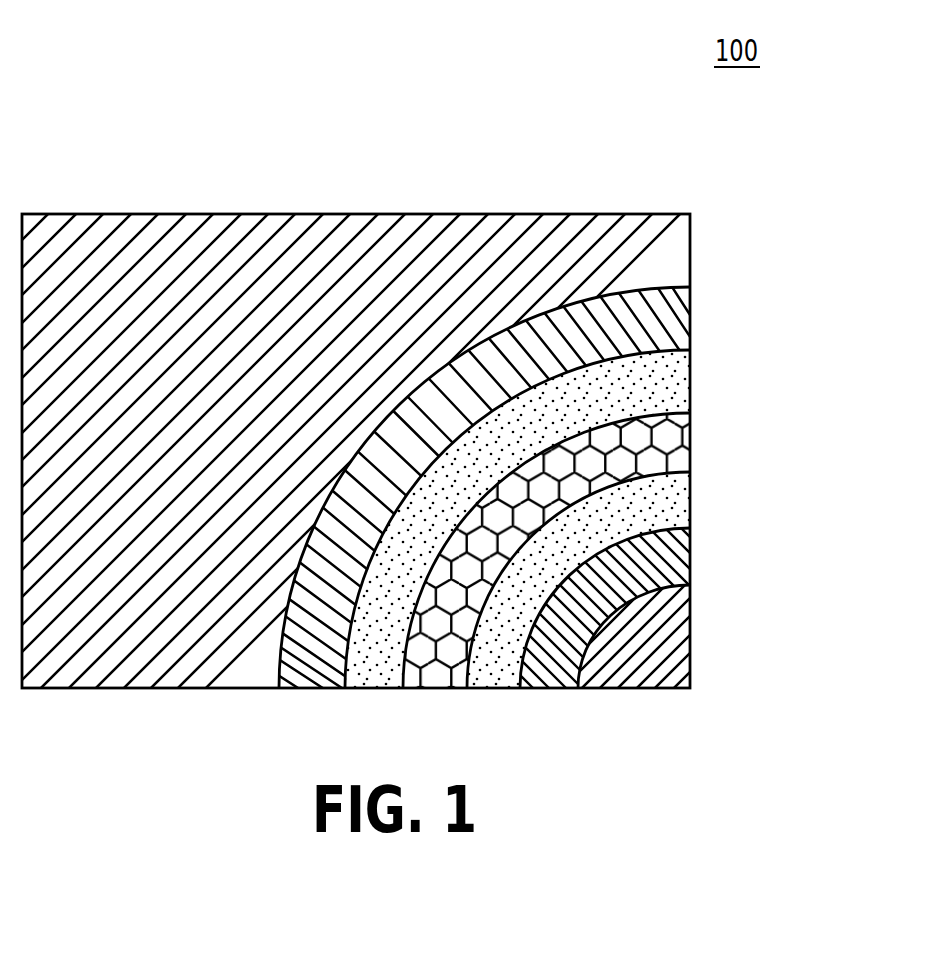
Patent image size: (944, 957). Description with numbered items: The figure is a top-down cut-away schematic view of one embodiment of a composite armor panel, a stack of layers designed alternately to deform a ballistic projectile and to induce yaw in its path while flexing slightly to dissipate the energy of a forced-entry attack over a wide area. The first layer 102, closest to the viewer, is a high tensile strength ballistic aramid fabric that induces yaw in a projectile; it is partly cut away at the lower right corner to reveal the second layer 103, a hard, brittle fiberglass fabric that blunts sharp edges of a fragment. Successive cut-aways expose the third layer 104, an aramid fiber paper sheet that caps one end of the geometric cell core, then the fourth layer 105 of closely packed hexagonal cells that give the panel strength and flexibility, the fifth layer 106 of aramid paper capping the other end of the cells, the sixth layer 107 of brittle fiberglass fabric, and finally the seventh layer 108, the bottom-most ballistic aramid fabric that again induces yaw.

The first layer 102 is at (676, 242).
The second layer 103 is at (683, 318).
The third layer 104 is at (680, 378).
The fourth layer 105 is at (683, 437).
The fifth layer 106 is at (688, 493).
The sixth layer 107 is at (683, 552).
The seventh layer 108 is at (686, 656).